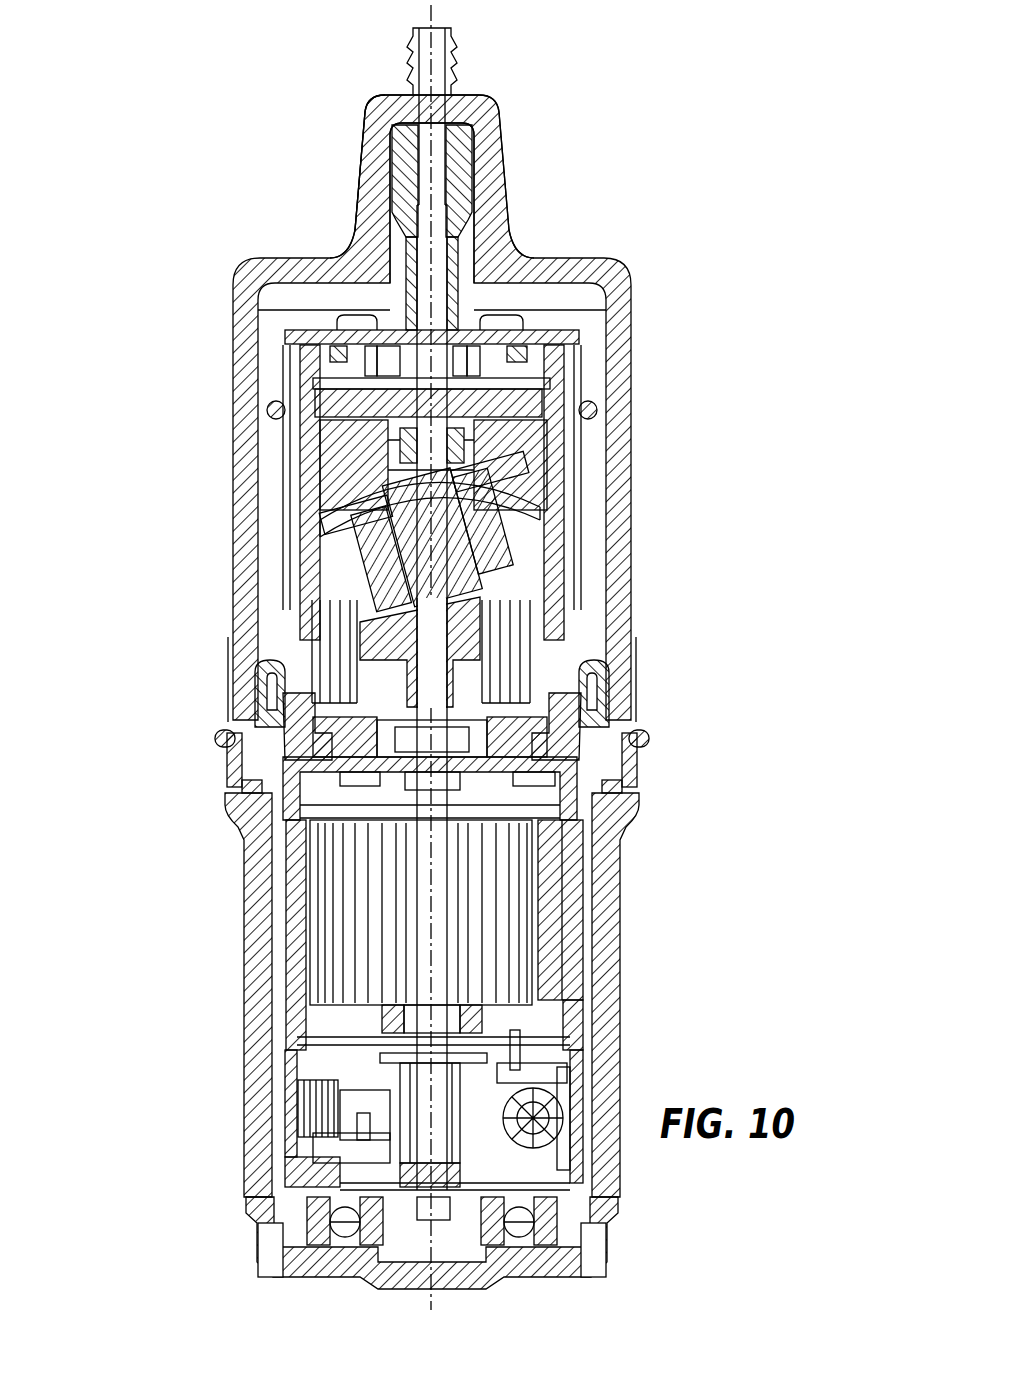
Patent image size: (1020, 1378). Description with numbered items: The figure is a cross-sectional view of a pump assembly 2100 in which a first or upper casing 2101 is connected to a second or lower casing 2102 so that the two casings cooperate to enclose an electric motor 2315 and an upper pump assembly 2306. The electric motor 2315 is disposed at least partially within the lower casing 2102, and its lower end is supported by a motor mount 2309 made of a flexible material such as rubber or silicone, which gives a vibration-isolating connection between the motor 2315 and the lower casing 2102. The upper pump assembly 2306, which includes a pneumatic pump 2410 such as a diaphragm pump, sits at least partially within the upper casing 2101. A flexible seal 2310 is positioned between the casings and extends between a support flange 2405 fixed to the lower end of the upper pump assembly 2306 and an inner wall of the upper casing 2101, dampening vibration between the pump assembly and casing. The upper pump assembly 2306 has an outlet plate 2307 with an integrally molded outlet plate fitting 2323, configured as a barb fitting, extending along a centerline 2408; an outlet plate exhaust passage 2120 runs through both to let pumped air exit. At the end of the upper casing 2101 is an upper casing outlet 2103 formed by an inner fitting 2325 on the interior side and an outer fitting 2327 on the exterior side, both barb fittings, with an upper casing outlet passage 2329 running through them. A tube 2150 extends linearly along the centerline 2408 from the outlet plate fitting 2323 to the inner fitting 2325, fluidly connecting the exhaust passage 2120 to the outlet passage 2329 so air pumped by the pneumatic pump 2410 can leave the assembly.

The pump assembly 2100 is at (177, 262).
The upper casing 2101 is at (243, 390).
The lower casing 2102 is at (606, 985).
The upper casing outlet 2103 is at (527, 113).
The centerline 2408 is at (450, 45).
The outer fitting 2327 is at (449, 60).
The upper casing outlet passage 2329 is at (378, 103).
The inner fitting 2325 is at (447, 180).
The tube 2150 is at (453, 250).
The outlet plate 2307 is at (377, 300).
The outlet plate fitting 2323 is at (463, 297).
The outlet plate exhaust passage 2120 is at (470, 359).
The pneumatic pump 2410 is at (537, 458).
The upper pump assembly 2306 is at (587, 493).
The support flange 2405 is at (228, 712).
The seal 2310 is at (640, 735).
The electric motor 2315 is at (560, 927).
The motor mount 2309 is at (590, 1237).